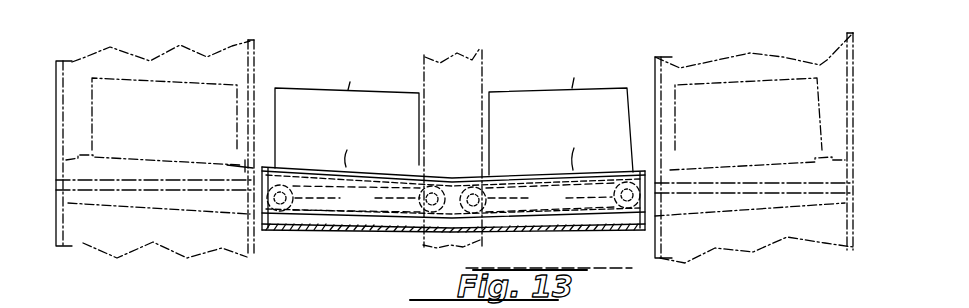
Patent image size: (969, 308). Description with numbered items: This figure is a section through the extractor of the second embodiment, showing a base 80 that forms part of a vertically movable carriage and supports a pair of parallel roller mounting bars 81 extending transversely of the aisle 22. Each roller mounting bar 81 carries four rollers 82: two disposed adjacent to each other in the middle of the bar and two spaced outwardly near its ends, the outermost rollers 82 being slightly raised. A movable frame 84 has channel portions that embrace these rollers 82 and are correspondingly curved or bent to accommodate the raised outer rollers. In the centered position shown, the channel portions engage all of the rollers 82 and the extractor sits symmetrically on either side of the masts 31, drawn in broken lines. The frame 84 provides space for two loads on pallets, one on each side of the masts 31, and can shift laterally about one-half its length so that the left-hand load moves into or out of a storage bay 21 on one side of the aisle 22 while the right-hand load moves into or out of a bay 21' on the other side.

The storage bay 21 is at (155, 138).
The bay 21' is at (754, 141).
The aisle 22 is at (392, 66).
The masts 31 is at (482, 60).
The base 80 is at (323, 232).
The roller mounting bars 81 is at (312, 186).
The rollers 82 is at (453, 197).
The movable frame 84 is at (160, 148).